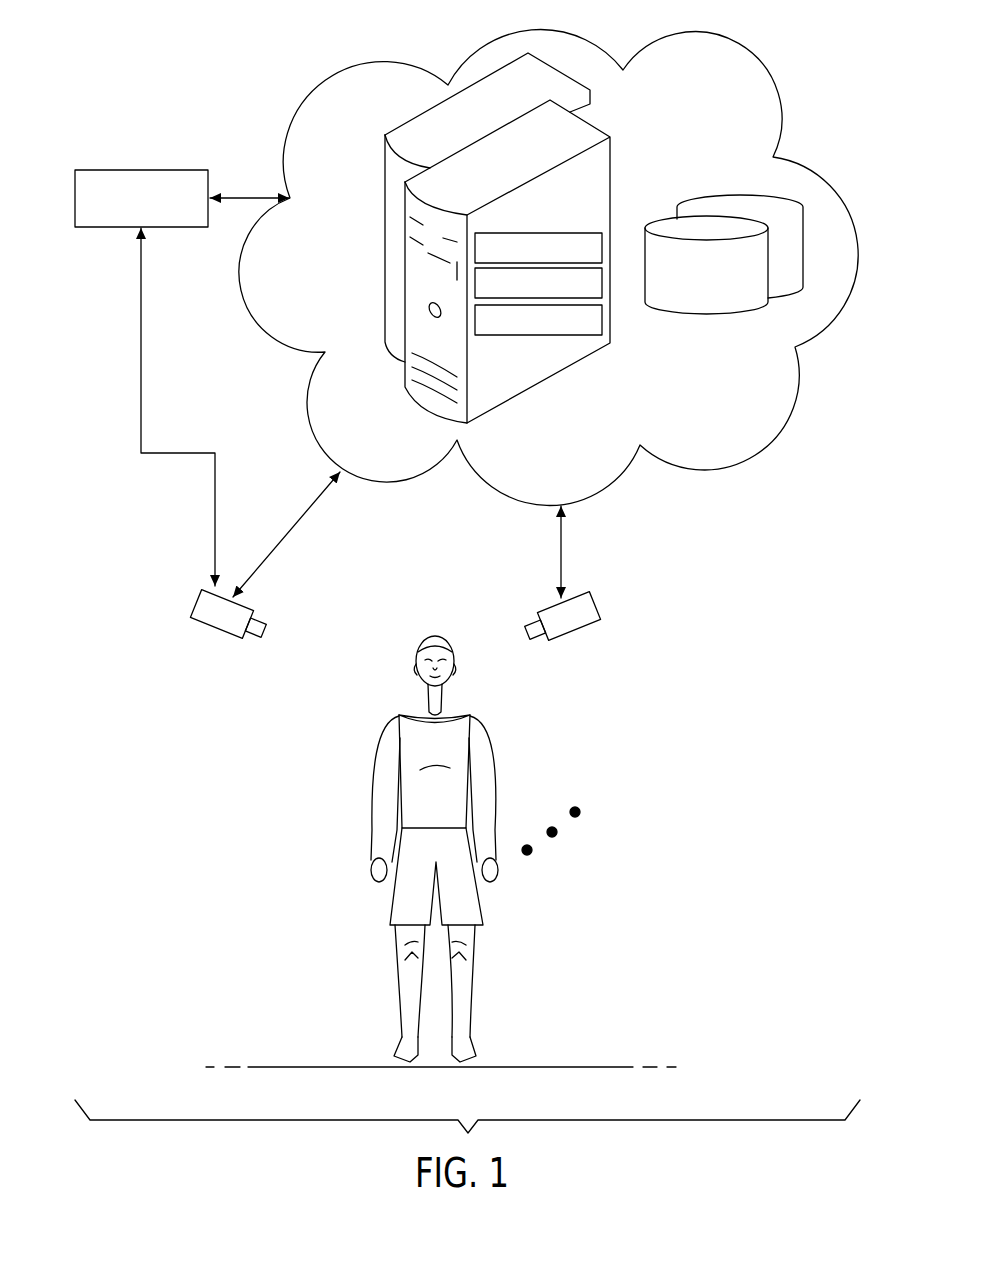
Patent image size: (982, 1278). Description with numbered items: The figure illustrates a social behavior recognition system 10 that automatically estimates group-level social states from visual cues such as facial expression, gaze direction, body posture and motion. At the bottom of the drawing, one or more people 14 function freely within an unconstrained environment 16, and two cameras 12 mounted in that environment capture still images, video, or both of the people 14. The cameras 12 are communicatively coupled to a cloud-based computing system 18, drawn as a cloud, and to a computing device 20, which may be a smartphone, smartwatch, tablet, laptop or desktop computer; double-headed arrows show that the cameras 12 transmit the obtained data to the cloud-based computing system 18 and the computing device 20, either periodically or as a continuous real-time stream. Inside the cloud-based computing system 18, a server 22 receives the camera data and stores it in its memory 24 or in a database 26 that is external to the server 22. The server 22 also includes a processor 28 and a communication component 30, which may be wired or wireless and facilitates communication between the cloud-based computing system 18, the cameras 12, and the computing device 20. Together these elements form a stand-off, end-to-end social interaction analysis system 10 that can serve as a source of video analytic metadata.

The social behavior recognition system 10 is at (131, 114).
The cameras 12 is at (213, 630).
The people 14 is at (466, 617).
The unconstrained environment 16 is at (281, 836).
The cloud-based computing system 18 is at (330, 83).
The computing device 20 is at (140, 170).
The servers 22 is at (428, 122).
The memories 24 is at (603, 285).
The databases 26 is at (662, 219).
The processors 28 is at (603, 248).
The communication component 30 is at (537, 337).